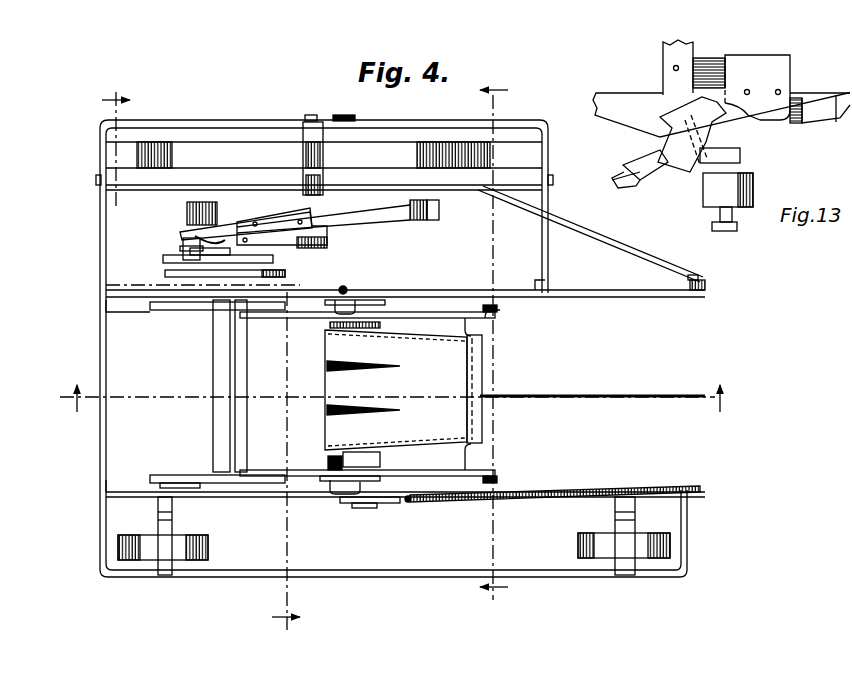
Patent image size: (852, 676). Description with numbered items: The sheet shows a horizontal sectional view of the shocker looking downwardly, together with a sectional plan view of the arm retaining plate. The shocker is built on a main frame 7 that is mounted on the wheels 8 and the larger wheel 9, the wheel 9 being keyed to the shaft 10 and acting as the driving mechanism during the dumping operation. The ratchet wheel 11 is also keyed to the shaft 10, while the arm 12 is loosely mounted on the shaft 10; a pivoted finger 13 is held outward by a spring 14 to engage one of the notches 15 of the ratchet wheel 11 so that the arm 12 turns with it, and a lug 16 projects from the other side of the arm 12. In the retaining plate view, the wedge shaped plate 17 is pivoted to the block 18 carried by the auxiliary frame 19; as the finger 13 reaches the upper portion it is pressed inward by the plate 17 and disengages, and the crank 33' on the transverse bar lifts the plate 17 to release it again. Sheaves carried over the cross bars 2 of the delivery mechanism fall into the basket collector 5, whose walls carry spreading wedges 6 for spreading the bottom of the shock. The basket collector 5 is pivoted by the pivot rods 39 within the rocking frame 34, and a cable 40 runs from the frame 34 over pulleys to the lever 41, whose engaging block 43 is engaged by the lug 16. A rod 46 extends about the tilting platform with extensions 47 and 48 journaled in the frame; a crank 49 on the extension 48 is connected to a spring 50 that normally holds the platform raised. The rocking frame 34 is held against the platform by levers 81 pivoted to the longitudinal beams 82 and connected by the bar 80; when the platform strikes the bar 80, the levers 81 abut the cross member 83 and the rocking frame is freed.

In FIG. 4, the cross bars 2 is at (201, 364).
In FIG. 4, the basket collector 5 is at (470, 372).
In FIG. 4, the spreading wedges 6 is at (363, 388).
In FIG. 4, the main frame 7 is at (542, 153).
In FIG. 4, the wheels 8 is at (208, 548).
In FIG. 4, the wheel 9 is at (212, 147).
In FIG. 4, the shaft 10 is at (303, 125).
In FIG. 4, the ratchet wheel 11 is at (440, 207).
In FIG. 4, the arm 12 is at (290, 250).
In FIG. 13, the arm 12 is at (754, 188).
In FIG. 4, the pivoted finger 13 is at (187, 218).
In FIG. 4, the spring 14 is at (185, 231).
In FIG. 4, the notches 15 is at (408, 215).
In FIG. 4, the lug 16 is at (182, 249).
In FIG. 13, the lug 16 is at (737, 228).
In FIG. 13, the wedge shaped plate 17 is at (690, 172).
In FIG. 13, the block 18 is at (785, 122).
In FIG. 13, the auxiliary frame 19 is at (715, 65).
In FIG. 13, the crank 33' is at (640, 183).
In FIG. 4, the rocking frame 34 is at (418, 311).
In FIG. 4, the pivot rods 39 is at (370, 455).
In FIG. 4, the cable 40 is at (660, 396).
In FIG. 4, the lever 41 is at (270, 283).
In FIG. 4, the engaging block 43 is at (215, 261).
In FIG. 4, the rod 46 is at (330, 458).
In FIG. 4, the extension 47 is at (340, 300).
In FIG. 4, the extension 48 is at (340, 492).
In FIG. 4, the crank 49 is at (390, 502).
In FIG. 4, the spring 50 is at (540, 495).
In FIG. 4, the bar 80 is at (247, 414).
In FIG. 4, the levers 81 is at (190, 311).
In FIG. 4, the longitudinal beams 82 is at (136, 300).
In FIG. 4, the cross member 83 is at (213, 401).